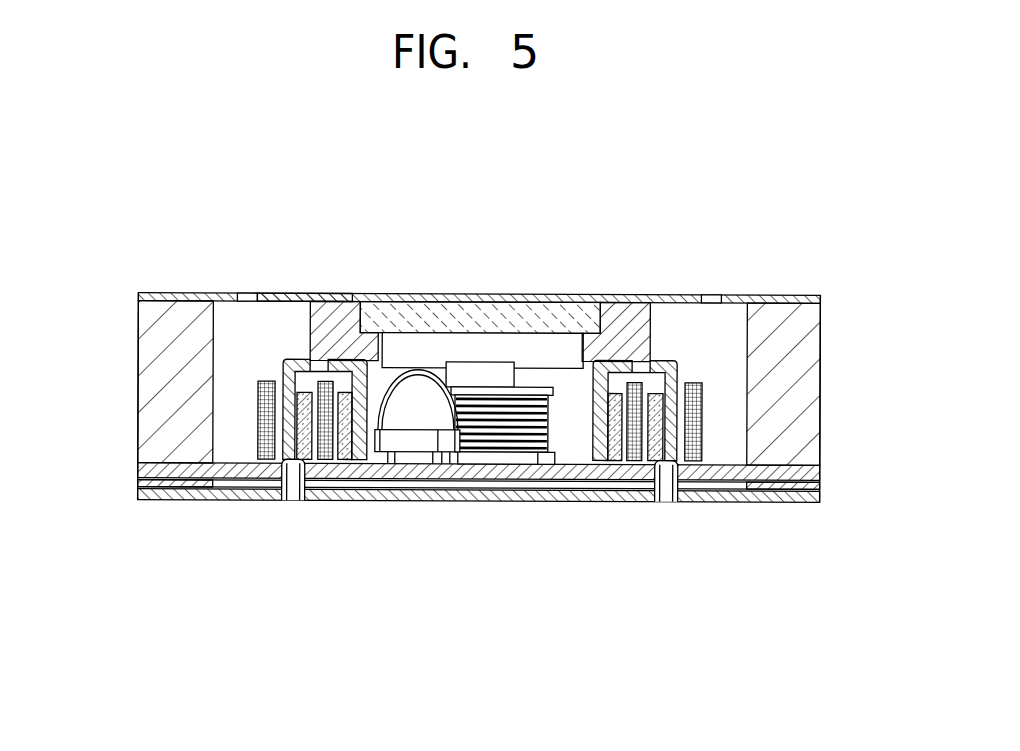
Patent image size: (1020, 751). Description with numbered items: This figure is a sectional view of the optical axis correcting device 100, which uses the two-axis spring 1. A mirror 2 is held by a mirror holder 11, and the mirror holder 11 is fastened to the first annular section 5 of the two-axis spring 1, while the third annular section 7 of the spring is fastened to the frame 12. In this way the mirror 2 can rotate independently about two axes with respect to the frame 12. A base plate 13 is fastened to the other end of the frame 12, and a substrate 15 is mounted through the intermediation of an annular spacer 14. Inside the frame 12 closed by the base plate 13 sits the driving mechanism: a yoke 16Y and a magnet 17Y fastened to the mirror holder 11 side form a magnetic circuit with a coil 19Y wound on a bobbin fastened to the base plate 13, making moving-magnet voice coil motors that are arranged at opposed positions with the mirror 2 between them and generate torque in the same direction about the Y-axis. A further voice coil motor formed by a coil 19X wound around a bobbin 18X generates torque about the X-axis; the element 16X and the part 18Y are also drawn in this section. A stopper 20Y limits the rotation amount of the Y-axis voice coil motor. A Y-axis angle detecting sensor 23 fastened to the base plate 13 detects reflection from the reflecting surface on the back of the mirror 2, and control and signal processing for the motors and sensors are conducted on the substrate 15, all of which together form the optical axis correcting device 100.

The two-axis spring 1 is at (674, 296).
The mirror 2 is at (549, 320).
The first annular section 5 is at (274, 294).
The third annular section 7 is at (178, 296).
The mirror holder 11 is at (333, 300).
The frame 12 is at (150, 375).
The base plate 13 is at (148, 468).
The annular spacer 14 is at (140, 486).
The substrate 15 is at (140, 494).
The X-axis magnet 16X is at (485, 362).
The yoke 16Y is at (604, 448).
The magnet 17Y is at (632, 455).
The bobbin 18X is at (528, 454).
The Y-axis coil 18Y is at (695, 462).
The coil 19X is at (488, 436).
The coil 19Y is at (700, 421).
The stopper 20Y is at (665, 503).
The Y-axis angle detecting sensor 23 is at (417, 412).
The optical axis correcting device 100 is at (258, 578).